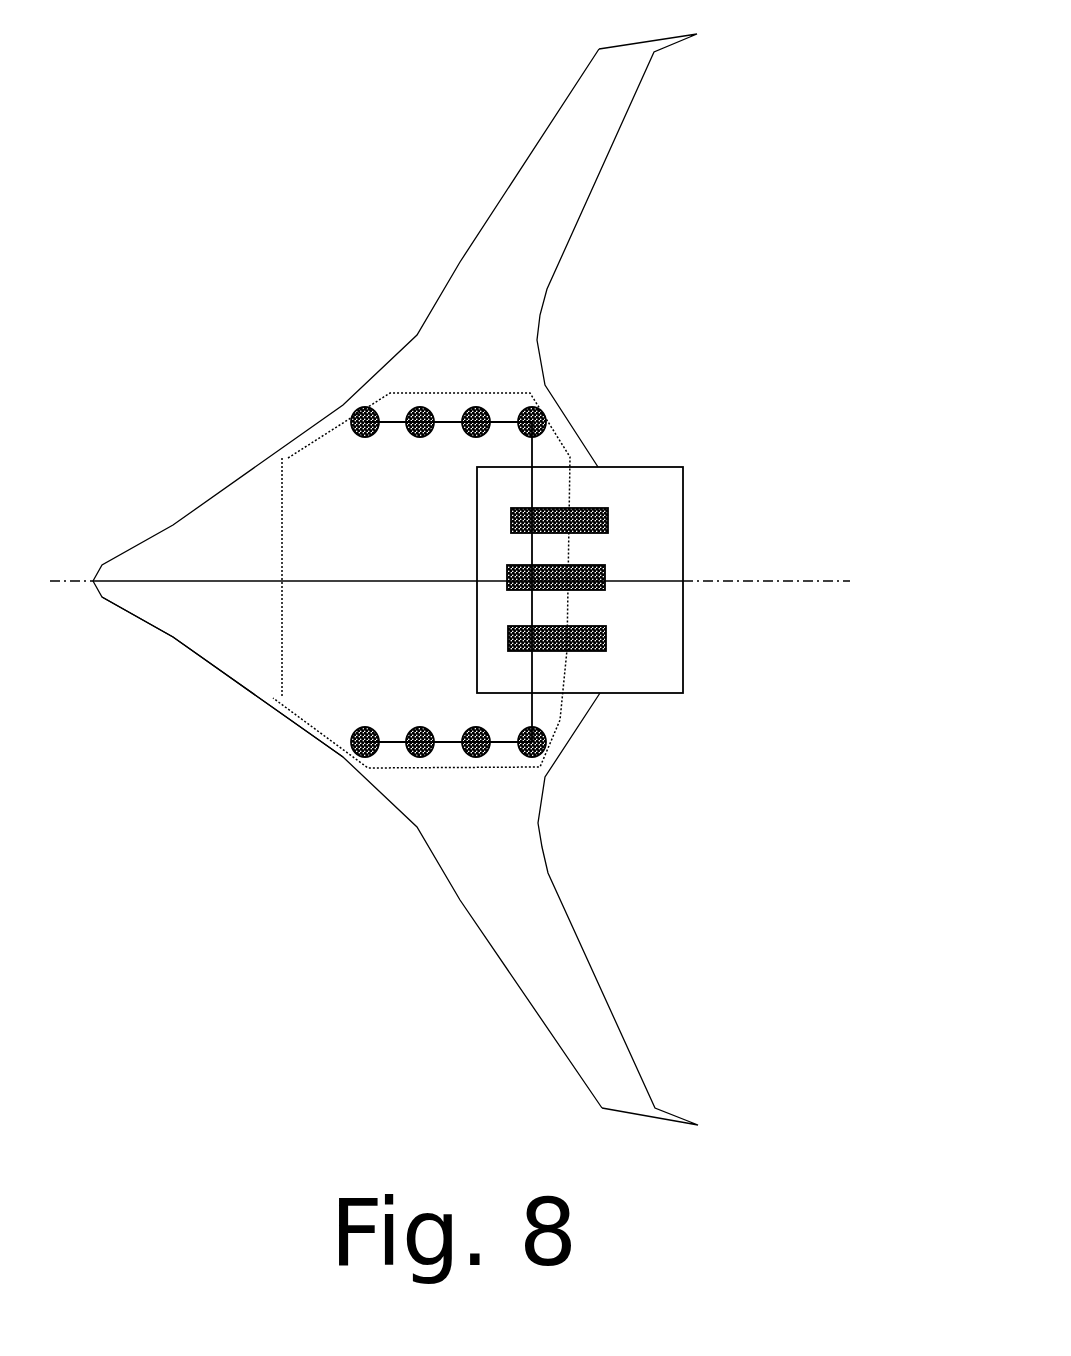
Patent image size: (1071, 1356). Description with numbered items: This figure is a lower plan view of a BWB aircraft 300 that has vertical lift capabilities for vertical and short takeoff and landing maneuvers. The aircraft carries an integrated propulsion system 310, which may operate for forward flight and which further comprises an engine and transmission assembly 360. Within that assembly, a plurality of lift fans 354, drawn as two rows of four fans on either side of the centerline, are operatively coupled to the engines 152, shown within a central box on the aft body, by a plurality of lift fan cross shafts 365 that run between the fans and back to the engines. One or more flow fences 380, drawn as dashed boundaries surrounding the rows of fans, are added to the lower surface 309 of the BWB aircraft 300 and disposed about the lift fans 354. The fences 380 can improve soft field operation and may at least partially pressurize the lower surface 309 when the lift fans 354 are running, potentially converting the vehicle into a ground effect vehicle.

The BWB aircraft 300 is at (140, 142).
The integrated propulsion system 310 is at (815, 272).
The engine and transmission assembly 360 is at (225, 390).
The flow fences 380 is at (338, 423).
The lift fans 354 is at (412, 413).
The lift fan cross shafts 365 is at (530, 443).
The engines 152 is at (574, 510).
The lower surface 309 is at (173, 612).